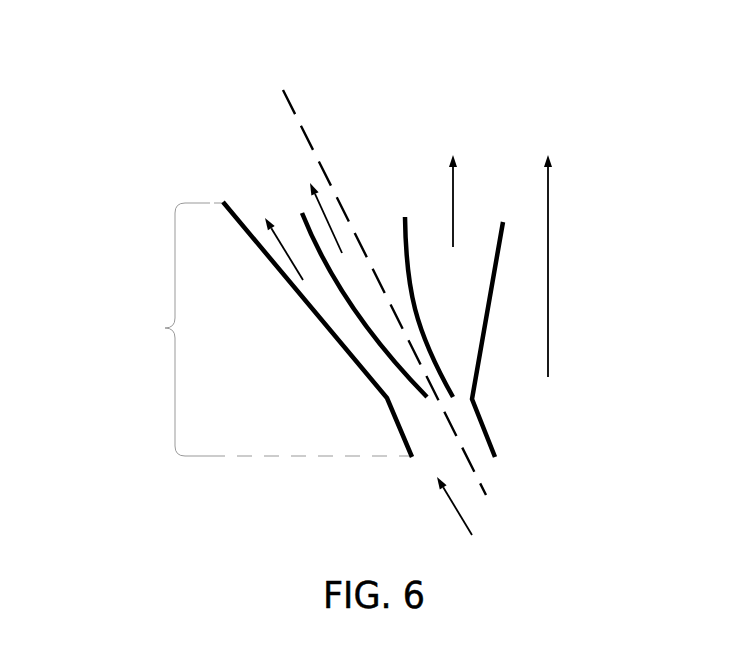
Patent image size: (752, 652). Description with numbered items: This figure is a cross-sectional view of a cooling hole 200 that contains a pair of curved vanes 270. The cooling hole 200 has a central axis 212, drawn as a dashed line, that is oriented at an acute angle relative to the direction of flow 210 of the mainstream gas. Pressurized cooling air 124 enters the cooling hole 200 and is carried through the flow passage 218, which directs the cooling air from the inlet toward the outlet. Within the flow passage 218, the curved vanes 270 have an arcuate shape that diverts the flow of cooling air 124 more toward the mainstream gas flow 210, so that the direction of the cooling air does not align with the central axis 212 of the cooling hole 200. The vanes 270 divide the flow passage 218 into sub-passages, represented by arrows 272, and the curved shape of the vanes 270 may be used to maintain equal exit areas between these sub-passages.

The cooling hole 200 is at (144, 36).
The central axis 212 is at (296, 99).
The flow passage 218 is at (162, 328).
The curved vanes 270 is at (301, 221).
The arrows representing sub-passages 272 is at (335, 242).
The direction of flow of the mainstream gas 210 is at (548, 263).
The cooling air 124 is at (457, 515).